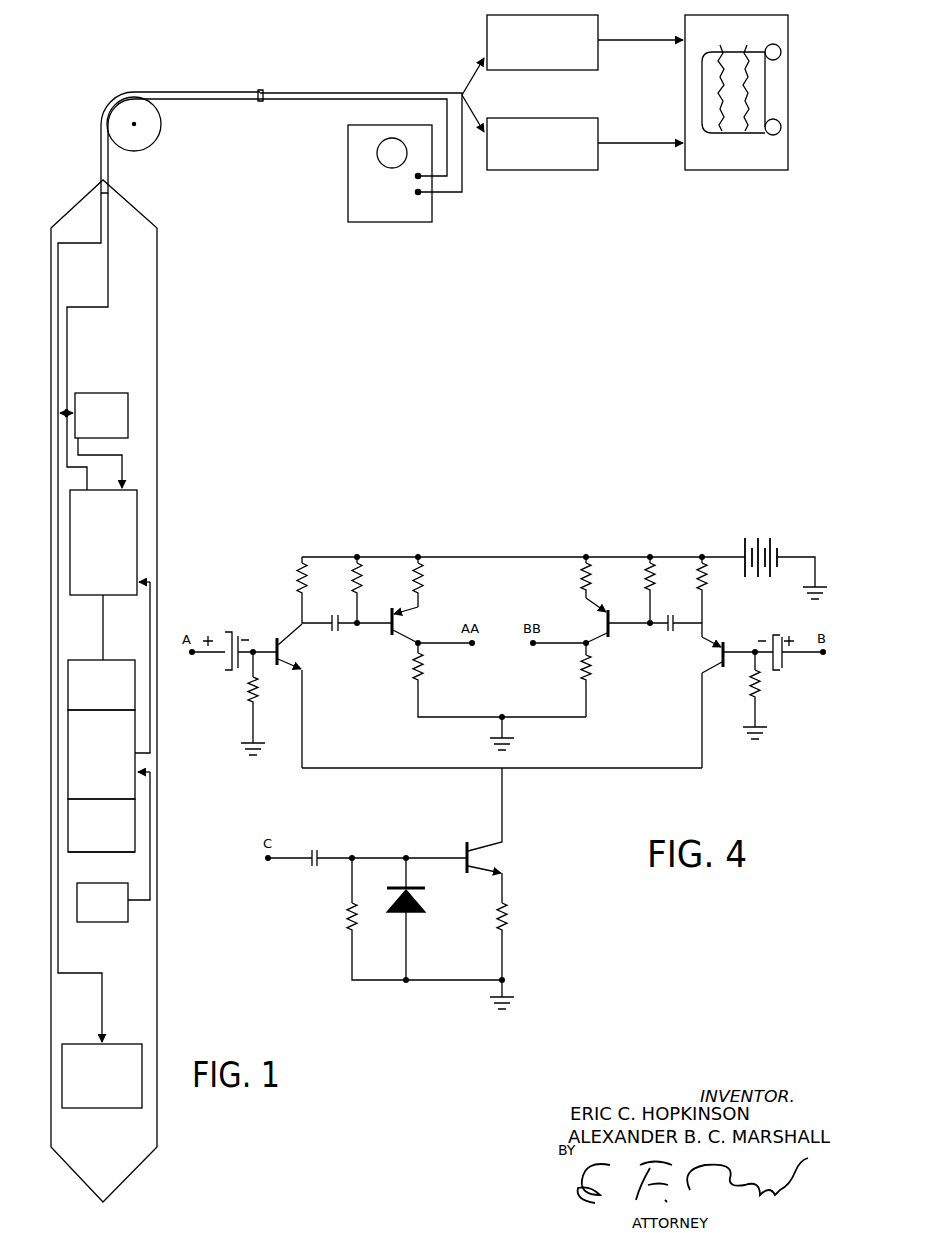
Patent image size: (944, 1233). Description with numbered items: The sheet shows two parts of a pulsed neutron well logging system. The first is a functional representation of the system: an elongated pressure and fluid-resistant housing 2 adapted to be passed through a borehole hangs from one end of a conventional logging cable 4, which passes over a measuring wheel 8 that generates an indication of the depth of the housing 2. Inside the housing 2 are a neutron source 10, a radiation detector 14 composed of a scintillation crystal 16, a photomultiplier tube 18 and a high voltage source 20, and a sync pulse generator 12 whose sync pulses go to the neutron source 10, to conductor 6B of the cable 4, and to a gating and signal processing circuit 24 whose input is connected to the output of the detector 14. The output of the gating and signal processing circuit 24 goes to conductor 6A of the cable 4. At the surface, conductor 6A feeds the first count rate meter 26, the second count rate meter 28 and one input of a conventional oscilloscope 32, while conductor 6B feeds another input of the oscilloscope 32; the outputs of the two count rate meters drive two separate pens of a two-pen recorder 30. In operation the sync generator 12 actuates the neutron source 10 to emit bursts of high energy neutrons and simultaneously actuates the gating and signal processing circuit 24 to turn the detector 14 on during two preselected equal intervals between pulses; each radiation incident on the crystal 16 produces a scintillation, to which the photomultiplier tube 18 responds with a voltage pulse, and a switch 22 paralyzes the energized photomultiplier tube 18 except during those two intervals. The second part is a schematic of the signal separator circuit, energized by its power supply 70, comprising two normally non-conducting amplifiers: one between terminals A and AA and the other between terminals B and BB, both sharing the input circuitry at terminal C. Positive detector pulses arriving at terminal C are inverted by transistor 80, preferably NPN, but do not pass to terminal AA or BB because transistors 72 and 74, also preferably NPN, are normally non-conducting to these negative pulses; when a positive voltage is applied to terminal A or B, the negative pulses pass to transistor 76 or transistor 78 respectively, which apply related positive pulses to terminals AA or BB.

In FIG. 1, the housing 2 is at (157, 957).
In FIG. 1, the logging cable 4 is at (108, 170).
In FIG. 1, the conductor 6A is at (421, 92).
In FIG. 1, the conductor 6B is at (446, 110).
In FIG. 1, the measuring wheel 8 is at (161, 128).
In FIG. 1, the neutron source 10 is at (114, 1043).
In FIG. 1, the sync pulse generator 12 is at (112, 392).
In FIG. 1, the radiation detector 14 is at (139, 809).
In FIG. 1, the scintillation crystal 16 is at (83, 852).
In FIG. 1, the photomultiplier tube 18 is at (68, 745).
In FIG. 1, the high voltage source 20 is at (97, 922).
In FIG. 1, the switch 22 is at (86, 660).
In FIG. 1, the gating and signal processing circuit 24 is at (128, 489).
In FIG. 1, the No. 1 count rate meter 26 is at (486, 30).
In FIG. 1, the No. 2 count rate meter 28 is at (585, 118).
In FIG. 1, the two-pen recorder 30 is at (685, 30).
In FIG. 1, the oscilloscope 32 is at (348, 135).
In FIG. 4, the power supply 70 is at (767, 535).
In FIG. 4, the transistor 72 is at (290, 632).
In FIG. 4, the transistor 74 is at (716, 639).
In FIG. 4, the transistor 76 is at (399, 639).
In FIG. 4, the transistor 78 is at (606, 637).
In FIG. 4, the transistor 80 is at (478, 840).